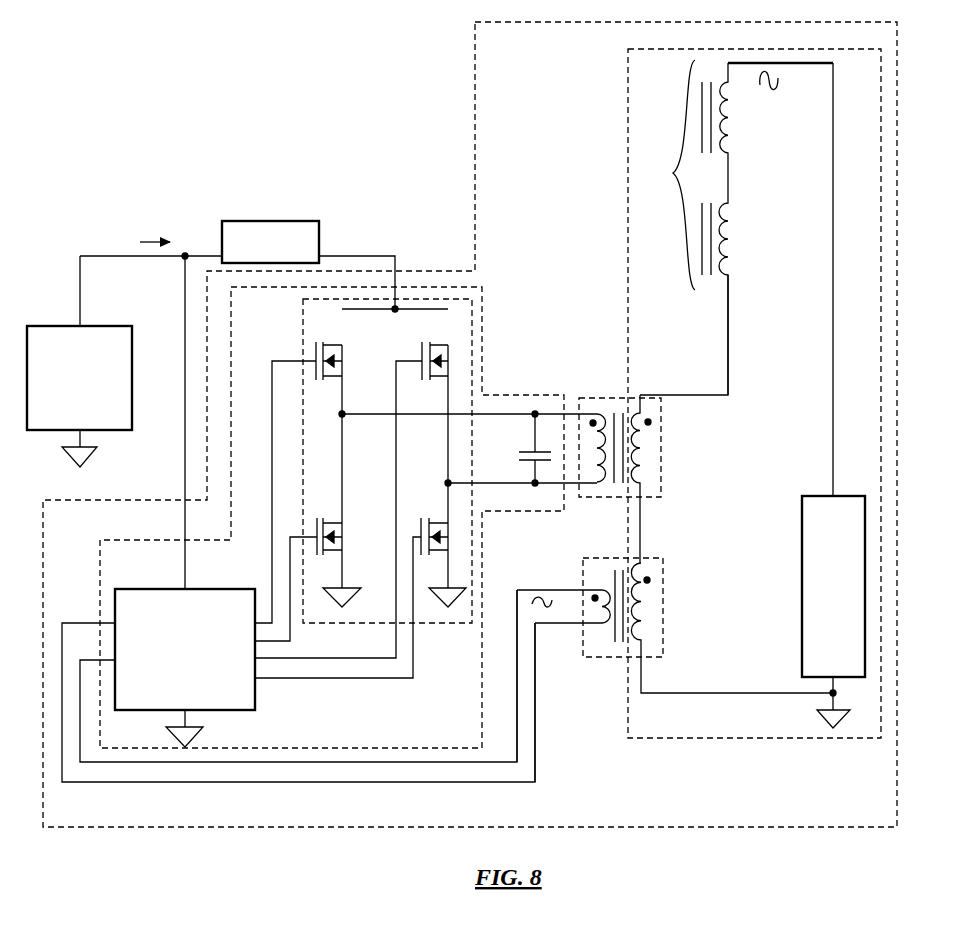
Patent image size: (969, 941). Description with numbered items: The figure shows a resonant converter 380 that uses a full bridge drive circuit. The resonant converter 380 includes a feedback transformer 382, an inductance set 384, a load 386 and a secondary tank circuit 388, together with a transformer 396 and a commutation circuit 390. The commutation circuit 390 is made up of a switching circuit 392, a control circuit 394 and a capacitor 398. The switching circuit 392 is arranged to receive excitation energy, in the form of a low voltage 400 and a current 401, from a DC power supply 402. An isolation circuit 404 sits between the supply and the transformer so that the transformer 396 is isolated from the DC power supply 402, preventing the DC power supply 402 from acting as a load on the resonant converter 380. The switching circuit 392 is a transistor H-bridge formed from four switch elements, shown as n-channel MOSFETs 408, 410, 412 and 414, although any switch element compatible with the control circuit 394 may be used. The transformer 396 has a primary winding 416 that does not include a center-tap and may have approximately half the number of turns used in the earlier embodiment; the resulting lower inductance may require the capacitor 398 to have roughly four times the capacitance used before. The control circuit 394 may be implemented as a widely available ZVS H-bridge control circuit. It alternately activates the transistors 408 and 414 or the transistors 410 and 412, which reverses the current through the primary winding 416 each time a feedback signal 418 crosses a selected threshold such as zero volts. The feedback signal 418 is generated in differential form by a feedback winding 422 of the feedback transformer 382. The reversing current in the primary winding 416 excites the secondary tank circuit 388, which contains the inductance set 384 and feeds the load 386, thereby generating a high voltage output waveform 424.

The resonant converter 380 is at (561, 24).
The feedback transformer 382 is at (657, 658).
The inductance set 384 is at (682, 227).
The load 386 is at (796, 395).
The secondary tank circuit 388 is at (683, 51).
The commutation circuit 390 is at (343, 748).
The switching circuit 392 is at (424, 626).
The control circuit 394 is at (298, 519).
The transformer 396 is at (656, 498).
The capacitor 398 is at (524, 452).
The low voltage 400 is at (91, 236).
The current 401 is at (163, 241).
The DC power supply 402 is at (79, 361).
The isolation circuit 404 is at (310, 266).
The n-channel MOSFET 408 is at (310, 345).
The n-channel MOSFET 410 is at (420, 345).
The n-channel MOSFET 412 is at (310, 518).
The n-channel MOSFET 414 is at (412, 528).
The primary winding 416 is at (594, 466).
The feedback signal 418 is at (530, 588).
The feedback winding 422 is at (605, 637).
The high voltage output waveform 424 is at (766, 95).